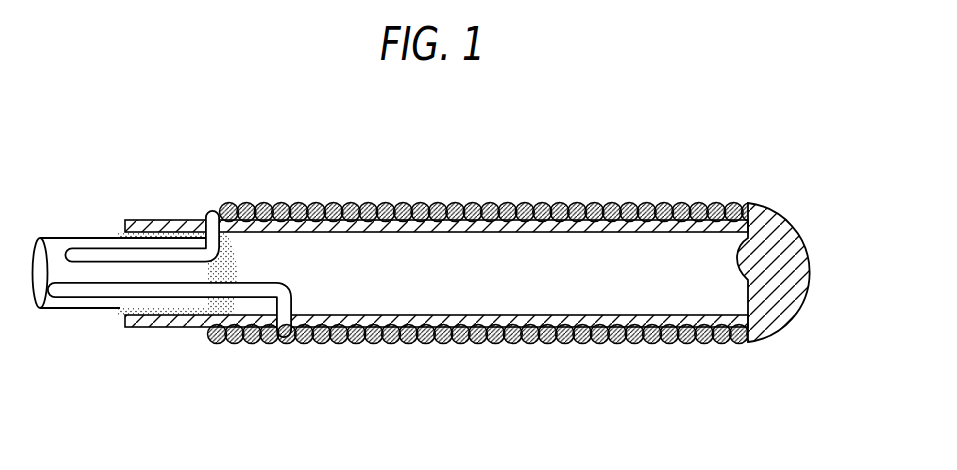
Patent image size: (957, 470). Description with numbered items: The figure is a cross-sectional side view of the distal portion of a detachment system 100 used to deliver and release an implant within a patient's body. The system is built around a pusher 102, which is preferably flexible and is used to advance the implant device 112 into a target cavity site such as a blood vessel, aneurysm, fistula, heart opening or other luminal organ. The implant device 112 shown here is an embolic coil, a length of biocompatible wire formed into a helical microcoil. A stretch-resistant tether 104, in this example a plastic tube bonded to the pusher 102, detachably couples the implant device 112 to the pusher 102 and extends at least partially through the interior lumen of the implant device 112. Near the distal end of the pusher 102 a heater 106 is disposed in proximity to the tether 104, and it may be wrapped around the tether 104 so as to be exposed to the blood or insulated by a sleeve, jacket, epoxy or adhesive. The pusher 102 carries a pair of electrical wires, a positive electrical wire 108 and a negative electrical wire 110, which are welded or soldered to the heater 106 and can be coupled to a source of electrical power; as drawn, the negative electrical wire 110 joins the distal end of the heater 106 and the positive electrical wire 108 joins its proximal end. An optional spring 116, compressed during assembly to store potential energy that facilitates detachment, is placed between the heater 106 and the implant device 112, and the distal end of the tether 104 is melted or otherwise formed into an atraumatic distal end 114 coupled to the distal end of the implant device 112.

The detachment system 100 is at (178, 120).
The pusher 102 is at (73, 238).
The stretch-resistant tether 104 is at (170, 327).
The heater 106 is at (248, 205).
The positive electrical wire 108 is at (65, 283).
The negative electrical wire 110 is at (93, 262).
The implant device 112 is at (527, 204).
The atraumatic distal end 114 is at (801, 227).
The spring 116 is at (349, 366).